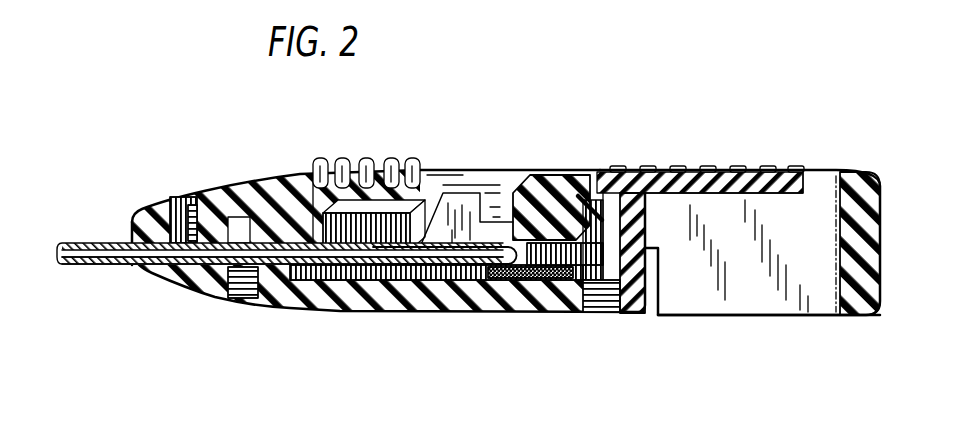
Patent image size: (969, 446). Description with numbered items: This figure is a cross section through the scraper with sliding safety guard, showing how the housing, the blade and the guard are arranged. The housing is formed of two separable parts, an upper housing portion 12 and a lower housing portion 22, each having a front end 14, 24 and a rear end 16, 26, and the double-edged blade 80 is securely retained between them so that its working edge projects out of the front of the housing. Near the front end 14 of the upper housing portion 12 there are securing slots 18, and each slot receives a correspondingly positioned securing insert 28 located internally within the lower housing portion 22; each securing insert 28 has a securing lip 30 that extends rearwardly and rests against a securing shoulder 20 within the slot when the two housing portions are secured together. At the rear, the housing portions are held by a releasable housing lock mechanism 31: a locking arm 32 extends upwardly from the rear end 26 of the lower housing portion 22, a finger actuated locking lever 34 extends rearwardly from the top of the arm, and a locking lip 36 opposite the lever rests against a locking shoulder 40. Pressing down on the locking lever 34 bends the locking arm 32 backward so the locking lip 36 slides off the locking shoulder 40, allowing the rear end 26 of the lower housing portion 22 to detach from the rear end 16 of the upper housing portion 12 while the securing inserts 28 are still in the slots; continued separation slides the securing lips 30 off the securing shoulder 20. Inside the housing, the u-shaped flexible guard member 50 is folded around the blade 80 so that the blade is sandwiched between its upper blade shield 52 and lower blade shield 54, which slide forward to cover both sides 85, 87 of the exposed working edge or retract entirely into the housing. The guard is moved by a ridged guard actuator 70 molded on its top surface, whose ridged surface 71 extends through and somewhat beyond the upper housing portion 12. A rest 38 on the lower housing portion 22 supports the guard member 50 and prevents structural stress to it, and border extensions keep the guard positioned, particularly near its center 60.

The upper housing portion 12 is at (450, 175).
The front end 14 is at (151, 203).
The rear end 16 is at (850, 172).
The securing slots 18 is at (243, 197).
The securing shoulder 20 is at (253, 298).
The lower housing portion 22 is at (395, 300).
The front end 24 is at (200, 290).
The rear end 26 is at (574, 305).
The securing insert 28 is at (197, 195).
The securing lip 30 is at (226, 195).
The releasable housing lock mechanism 31 is at (624, 130).
The locking arm 32 is at (670, 172).
The locking lever 34 is at (723, 170).
The locking lip 36 is at (598, 172).
The rest 38 is at (526, 300).
The locking shoulder 40 is at (596, 300).
The guard member 50 is at (297, 308).
The upper blade shield 52 is at (87, 243).
The lower blade shield 54 is at (87, 266).
The center 60 is at (500, 280).
The guard actuator 70 is at (364, 157).
The ridged surface 71 is at (388, 157).
The double-edged blade 80 is at (117, 267).
The side of the working edge 85 is at (100, 266).
The side of the working edge 87 is at (100, 243).